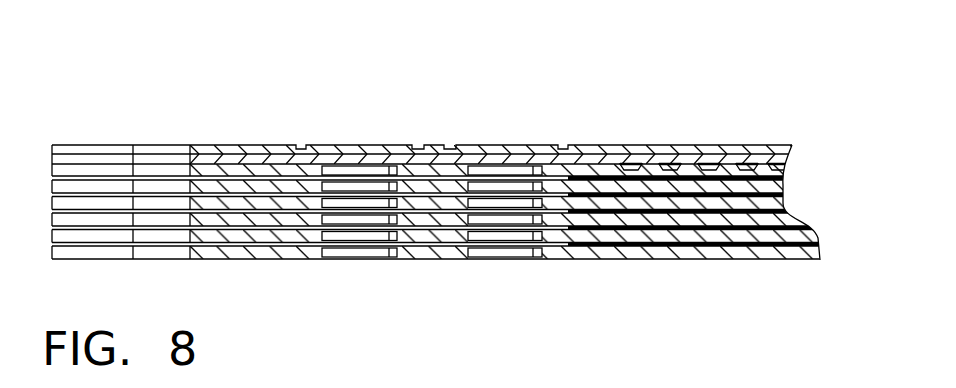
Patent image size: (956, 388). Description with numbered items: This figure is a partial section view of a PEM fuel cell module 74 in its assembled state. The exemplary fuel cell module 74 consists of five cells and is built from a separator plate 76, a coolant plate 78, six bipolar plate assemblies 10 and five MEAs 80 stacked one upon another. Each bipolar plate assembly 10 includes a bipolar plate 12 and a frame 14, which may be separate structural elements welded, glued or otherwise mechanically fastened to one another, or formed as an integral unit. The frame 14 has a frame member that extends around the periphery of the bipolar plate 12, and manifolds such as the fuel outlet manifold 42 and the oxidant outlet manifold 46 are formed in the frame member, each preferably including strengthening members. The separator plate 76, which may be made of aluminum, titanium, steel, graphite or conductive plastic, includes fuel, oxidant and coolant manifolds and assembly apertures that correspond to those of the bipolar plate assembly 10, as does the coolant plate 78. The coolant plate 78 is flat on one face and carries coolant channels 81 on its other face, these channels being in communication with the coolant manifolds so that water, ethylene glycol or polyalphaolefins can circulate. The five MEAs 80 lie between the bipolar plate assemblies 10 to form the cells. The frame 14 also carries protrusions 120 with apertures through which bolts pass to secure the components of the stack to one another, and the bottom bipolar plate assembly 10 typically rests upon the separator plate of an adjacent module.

The bipolar plate assembly 10 is at (92, 81).
The bipolar plate 12 is at (688, 170).
The frame 14 is at (231, 170).
The fuel outlet manifold 42 is at (350, 159).
The oxidant outlet manifold 46 is at (513, 172).
The PEM fuel cell module 74 is at (540, 58).
The separator plate 76 is at (322, 149).
The coolant plate 78 is at (478, 157).
The MEA 80 is at (783, 180).
The coolant channels 81 is at (631, 163).
The protrusions 120 is at (151, 170).